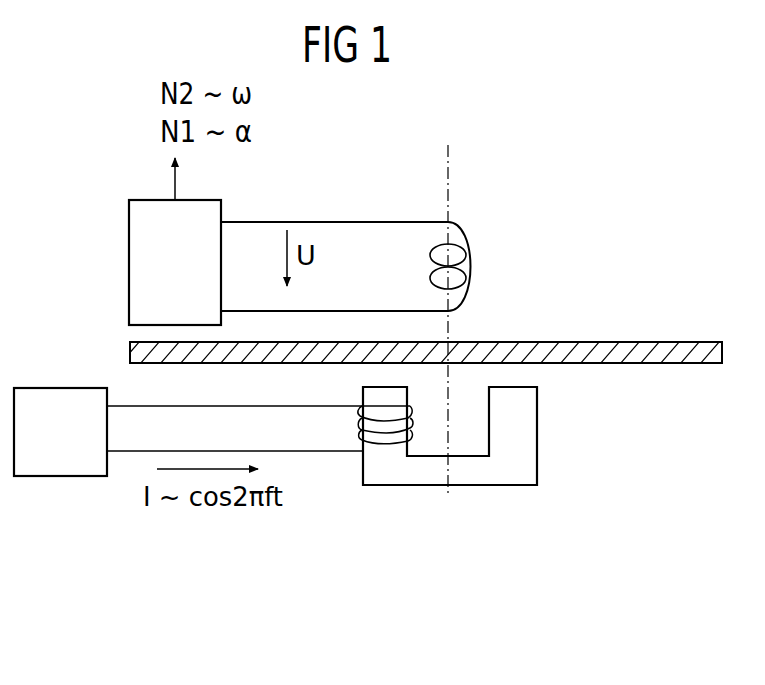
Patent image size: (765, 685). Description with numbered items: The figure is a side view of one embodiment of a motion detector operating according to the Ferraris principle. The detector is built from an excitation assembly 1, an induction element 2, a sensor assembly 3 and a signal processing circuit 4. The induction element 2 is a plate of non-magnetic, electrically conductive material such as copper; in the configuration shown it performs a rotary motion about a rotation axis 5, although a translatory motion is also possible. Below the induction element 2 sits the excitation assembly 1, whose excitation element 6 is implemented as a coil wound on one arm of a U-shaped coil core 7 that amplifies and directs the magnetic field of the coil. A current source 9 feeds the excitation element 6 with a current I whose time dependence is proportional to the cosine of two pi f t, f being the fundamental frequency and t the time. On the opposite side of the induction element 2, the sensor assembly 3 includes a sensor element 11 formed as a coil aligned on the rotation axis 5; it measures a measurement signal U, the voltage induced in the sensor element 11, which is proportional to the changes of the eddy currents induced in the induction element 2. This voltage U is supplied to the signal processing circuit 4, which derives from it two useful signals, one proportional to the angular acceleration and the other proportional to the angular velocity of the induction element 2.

The excitation assembly 1 is at (453, 467).
The induction element 2 is at (522, 347).
The sensor assembly 3 is at (389, 213).
The signal processing circuit 4 is at (129, 275).
The rotation axis 5 is at (447, 162).
The excitation element 6 is at (383, 435).
The coil core 7 is at (538, 427).
The current source 9 is at (60, 477).
The sensor element 11 is at (484, 246).